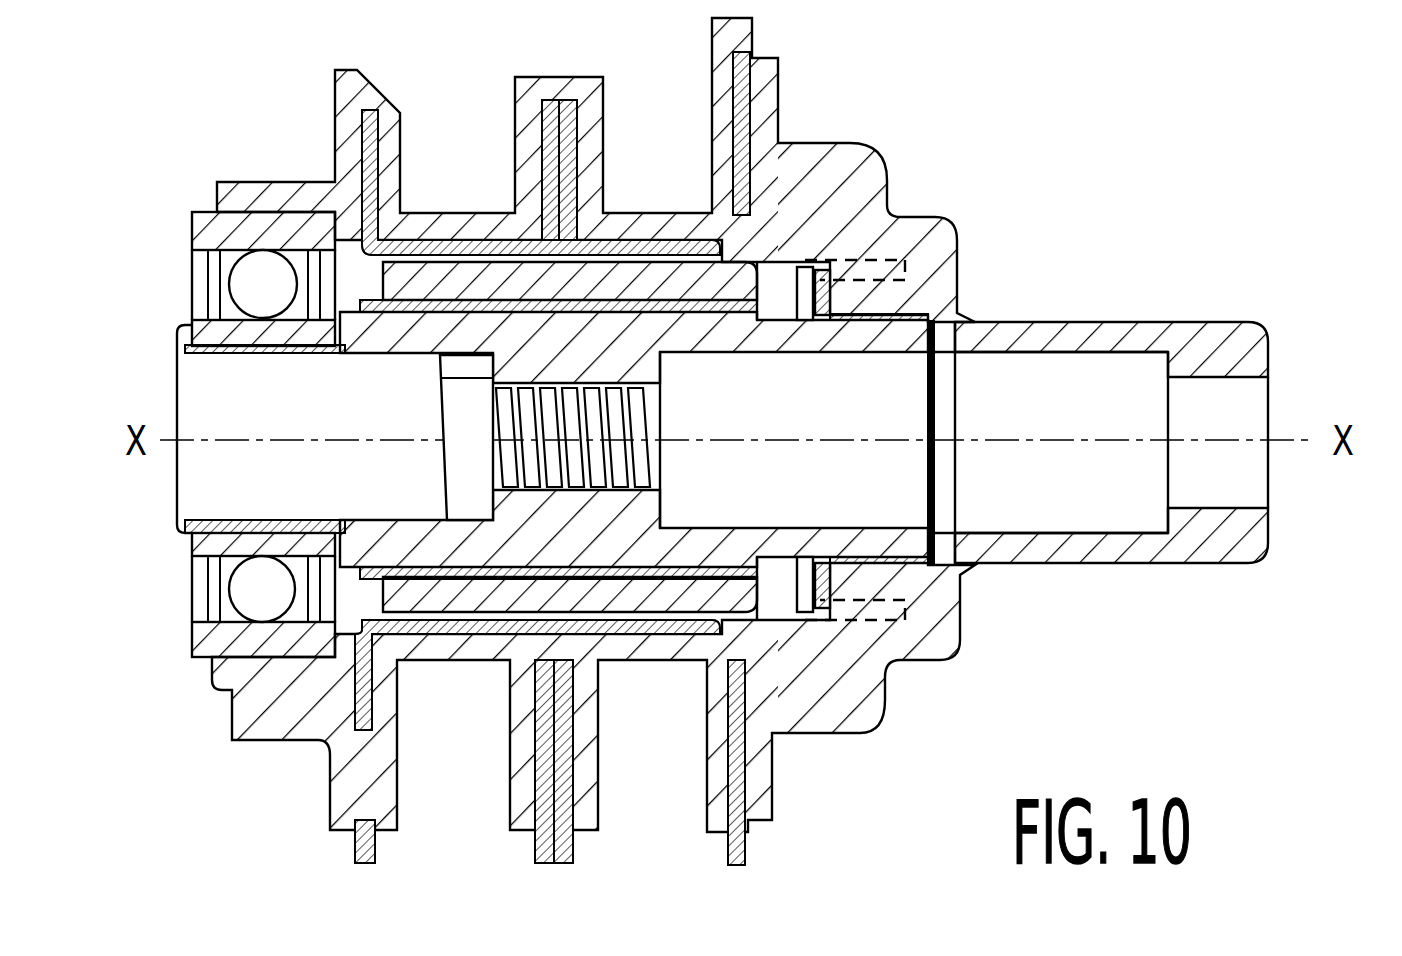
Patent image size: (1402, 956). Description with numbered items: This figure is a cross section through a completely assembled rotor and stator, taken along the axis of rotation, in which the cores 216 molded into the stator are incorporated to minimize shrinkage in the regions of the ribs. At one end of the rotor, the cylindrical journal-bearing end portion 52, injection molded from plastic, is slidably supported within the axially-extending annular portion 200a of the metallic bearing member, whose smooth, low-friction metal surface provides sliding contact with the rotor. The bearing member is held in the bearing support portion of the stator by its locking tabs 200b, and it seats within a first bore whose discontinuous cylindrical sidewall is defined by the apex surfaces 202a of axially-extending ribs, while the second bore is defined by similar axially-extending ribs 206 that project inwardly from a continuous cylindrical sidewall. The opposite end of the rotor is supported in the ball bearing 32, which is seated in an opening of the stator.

The ball bearing 32 is at (186, 652).
The cylindrical journal-bearing end portion 52 is at (872, 543).
The axially-extending annular portion 200a is at (893, 578).
The locking tabs 200b is at (905, 290).
The apex surfaces 202a is at (938, 377).
The axially-extending ribs 206 is at (802, 265).
The cores 216 is at (908, 258).